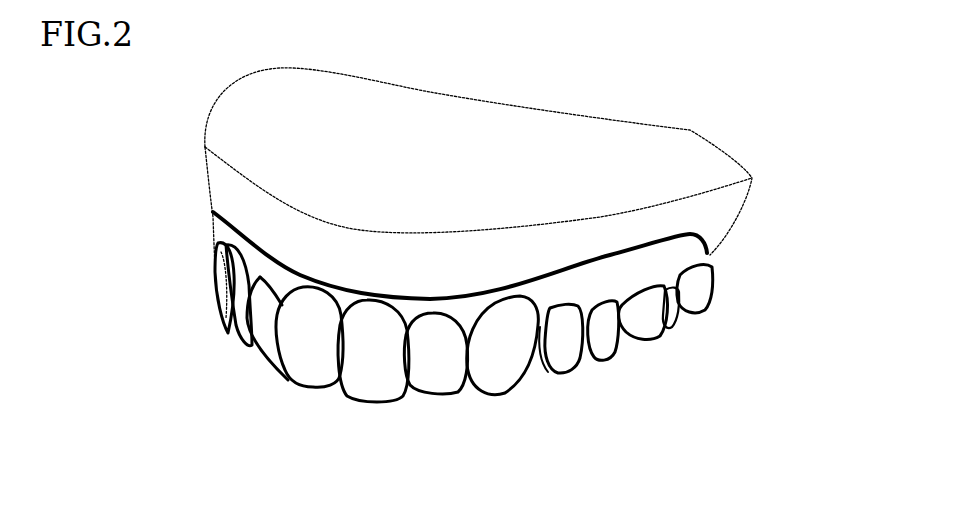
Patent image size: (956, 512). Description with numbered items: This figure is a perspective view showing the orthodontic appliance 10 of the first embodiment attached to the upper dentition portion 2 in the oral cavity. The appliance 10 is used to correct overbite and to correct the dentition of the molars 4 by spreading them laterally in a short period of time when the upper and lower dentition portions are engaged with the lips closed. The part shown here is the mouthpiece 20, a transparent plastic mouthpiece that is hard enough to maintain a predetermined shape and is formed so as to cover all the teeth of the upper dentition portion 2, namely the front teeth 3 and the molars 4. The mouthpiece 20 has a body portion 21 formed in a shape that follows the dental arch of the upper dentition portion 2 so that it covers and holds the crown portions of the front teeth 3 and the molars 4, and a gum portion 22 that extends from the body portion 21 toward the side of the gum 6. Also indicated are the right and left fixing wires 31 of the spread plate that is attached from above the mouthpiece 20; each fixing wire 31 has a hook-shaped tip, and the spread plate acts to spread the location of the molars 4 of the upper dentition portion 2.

The orthodontic appliance 10 is at (693, 108).
The mouthpiece 20 is at (233, 212).
The gum portion 22 is at (213, 230).
The gum 6 is at (577, 250).
The upper dentition portion 2 is at (224, 307).
The front teeth 3 is at (510, 373).
The molars 4 is at (643, 308).
The fixing wire 31 is at (210, 260).
The body portion 21 is at (603, 332).